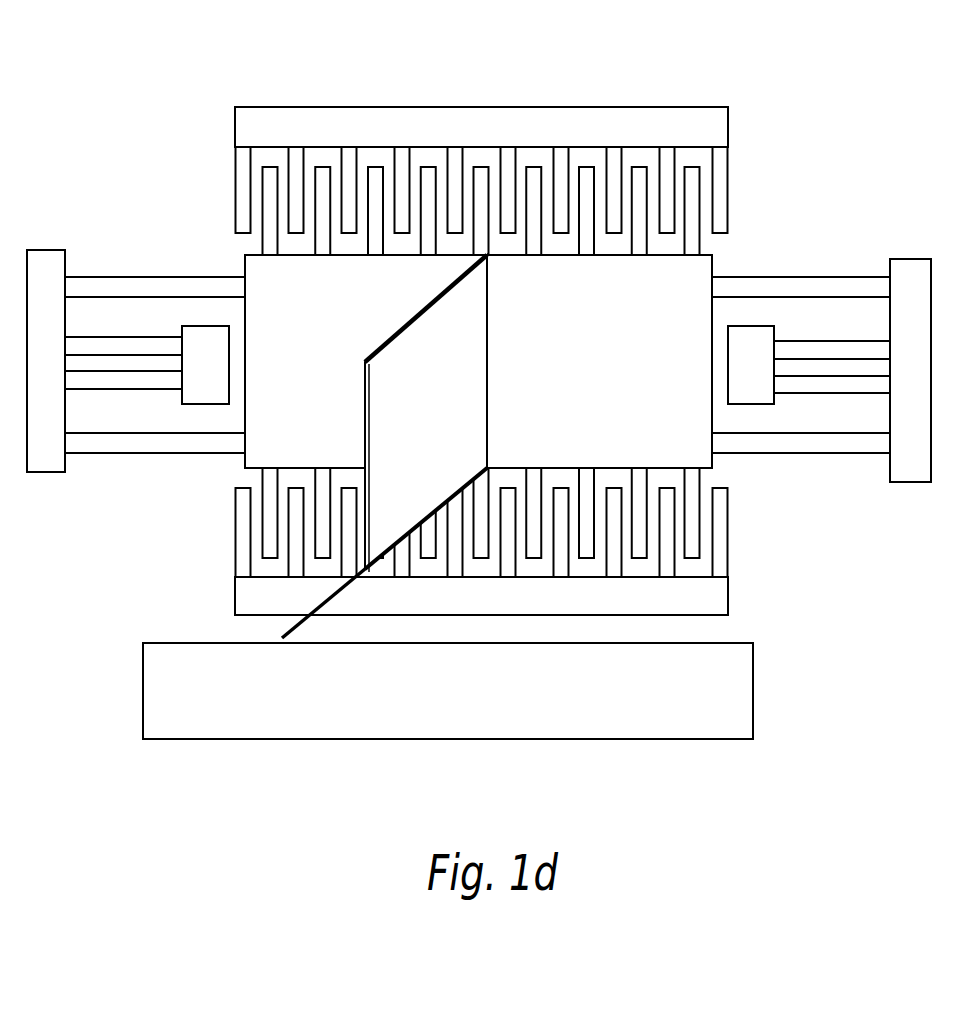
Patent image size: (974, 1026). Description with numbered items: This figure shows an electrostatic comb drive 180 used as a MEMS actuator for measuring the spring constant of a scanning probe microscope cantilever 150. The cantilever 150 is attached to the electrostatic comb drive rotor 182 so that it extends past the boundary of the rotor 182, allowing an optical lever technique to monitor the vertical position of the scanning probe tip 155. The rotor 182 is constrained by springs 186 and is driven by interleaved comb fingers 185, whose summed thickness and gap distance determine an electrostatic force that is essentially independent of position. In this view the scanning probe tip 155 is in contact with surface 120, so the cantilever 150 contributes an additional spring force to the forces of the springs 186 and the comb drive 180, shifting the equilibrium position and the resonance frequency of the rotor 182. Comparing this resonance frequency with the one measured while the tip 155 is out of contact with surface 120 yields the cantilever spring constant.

The surface 120 is at (740, 643).
The scanning probe microscope cantilever 150 is at (331, 596).
The scanning probe tip 155 is at (285, 637).
The electrostatic comb drive 180 is at (479, 322).
The electrostatic comb drive rotor 182 is at (268, 274).
The comb fingers 185 is at (693, 224).
The springs 186 is at (113, 455).